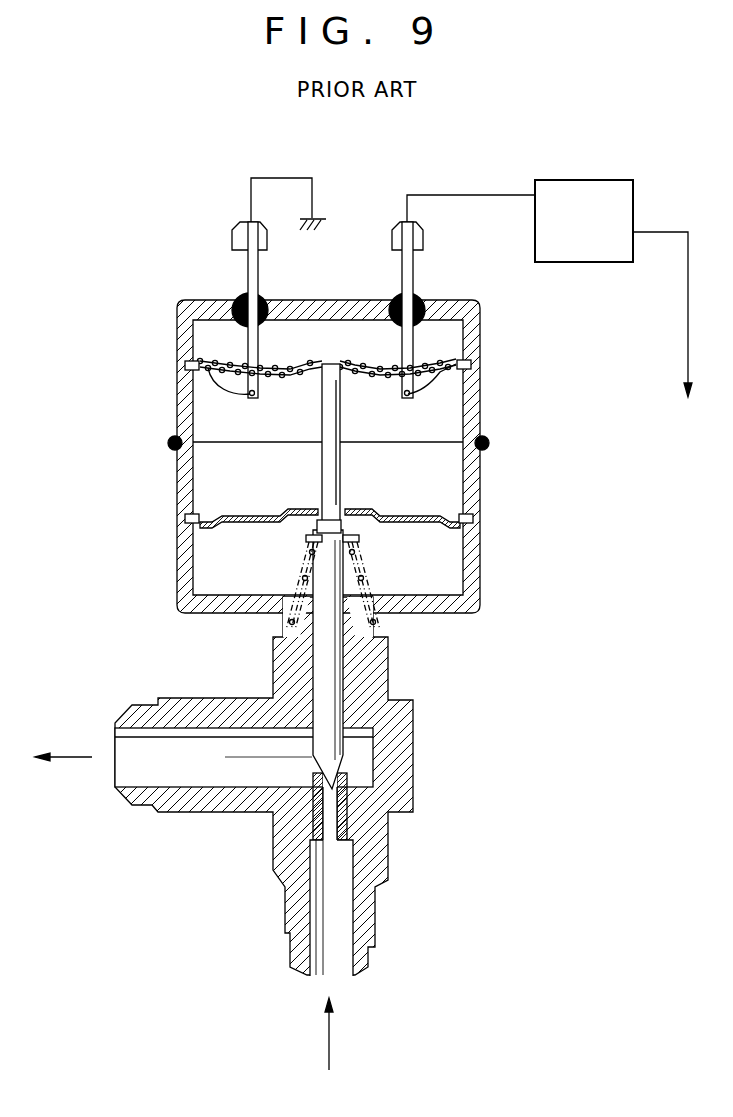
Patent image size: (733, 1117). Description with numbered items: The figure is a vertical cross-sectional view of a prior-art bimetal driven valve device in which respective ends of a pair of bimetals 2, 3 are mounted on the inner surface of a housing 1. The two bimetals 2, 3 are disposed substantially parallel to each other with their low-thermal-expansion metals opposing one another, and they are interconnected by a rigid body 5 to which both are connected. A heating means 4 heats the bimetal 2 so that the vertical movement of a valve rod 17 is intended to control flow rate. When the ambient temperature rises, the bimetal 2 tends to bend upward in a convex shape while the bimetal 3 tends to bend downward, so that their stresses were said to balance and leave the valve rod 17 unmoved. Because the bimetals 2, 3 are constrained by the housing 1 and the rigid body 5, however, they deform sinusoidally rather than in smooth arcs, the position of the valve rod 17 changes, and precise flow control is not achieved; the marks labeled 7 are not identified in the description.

The housing 1 is at (481, 331).
The bimetal 2 is at (456, 362).
The bimetal 3 is at (436, 516).
The heating means 4 is at (436, 374).
The rigid body 5 is at (341, 432).
The contact 7 is at (302, 374).
The valve rod 17 is at (340, 676).